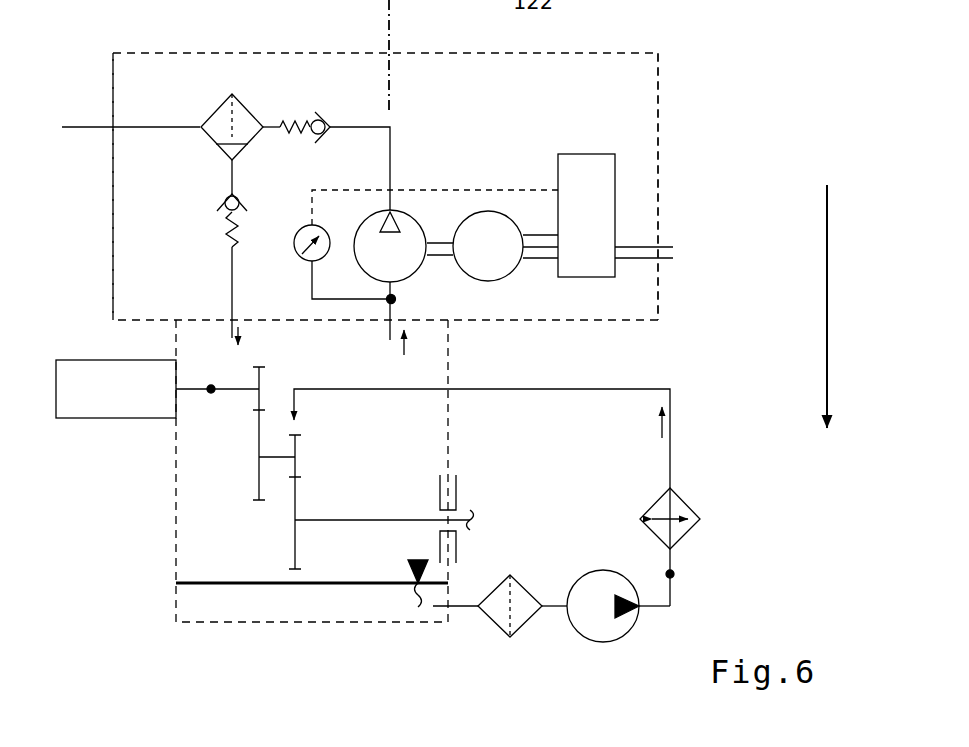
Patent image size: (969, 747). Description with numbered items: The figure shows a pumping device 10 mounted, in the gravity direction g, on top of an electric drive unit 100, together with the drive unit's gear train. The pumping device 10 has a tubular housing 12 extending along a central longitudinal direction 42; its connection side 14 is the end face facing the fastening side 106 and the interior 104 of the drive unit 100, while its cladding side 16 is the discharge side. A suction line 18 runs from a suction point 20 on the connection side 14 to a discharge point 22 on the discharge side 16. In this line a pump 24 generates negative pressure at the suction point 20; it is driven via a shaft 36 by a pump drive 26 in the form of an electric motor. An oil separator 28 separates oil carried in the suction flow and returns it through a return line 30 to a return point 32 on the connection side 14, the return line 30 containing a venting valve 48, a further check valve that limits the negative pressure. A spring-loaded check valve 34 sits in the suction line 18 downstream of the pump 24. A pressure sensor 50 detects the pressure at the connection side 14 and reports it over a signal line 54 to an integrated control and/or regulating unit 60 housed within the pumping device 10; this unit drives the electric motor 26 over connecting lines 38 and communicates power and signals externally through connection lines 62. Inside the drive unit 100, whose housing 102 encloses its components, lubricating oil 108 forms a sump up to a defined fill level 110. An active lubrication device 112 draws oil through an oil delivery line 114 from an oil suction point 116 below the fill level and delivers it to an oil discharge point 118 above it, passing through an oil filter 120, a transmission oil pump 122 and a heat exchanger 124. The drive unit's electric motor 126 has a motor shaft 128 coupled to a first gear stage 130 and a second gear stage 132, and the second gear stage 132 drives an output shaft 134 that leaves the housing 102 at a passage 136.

The pumping device 10 is at (676, 66).
The housing 12 is at (658, 125).
The connection side 14 is at (305, 326).
The cladding side 16 is at (102, 227).
The suction line 18 is at (404, 135).
The suction point 20 is at (384, 330).
The discharge point 22 is at (102, 117).
The pump 24 is at (405, 211).
The pump drive 26 is at (499, 214).
The oil separator 28 is at (213, 95).
The return line 30 is at (220, 285).
The return point 32 is at (221, 328).
The check valve 34 is at (301, 118).
The shaft 36 is at (440, 246).
The connecting lines 38 is at (535, 272).
The central longitudinal direction 42 is at (389, 40).
The venting valve 48 is at (212, 222).
The pressure sensor 50 is at (299, 228).
The signal line 54 is at (470, 190).
The integrated control and/or regulating unit 60 is at (582, 182).
The connection lines 62 is at (670, 239).
The gravity direction g is at (827, 299).
The electric drive unit 100 is at (108, 578).
The housing 102 is at (176, 450).
The interior 104 is at (190, 337).
The fastening side 106 is at (428, 321).
The lubricating oil 108 is at (200, 600).
The fill level 110 is at (421, 556).
The active lubrication device 112 is at (630, 660).
The oil delivery line 114 is at (703, 575).
The oil suction point 116 is at (436, 615).
The oil discharge point 118 is at (311, 406).
The oil filter 120 is at (521, 647).
The transmission oil pump 122 is at (648, 622).
The heat exchanger 124 is at (694, 494).
The electric motor 126 is at (72, 430).
The motor shaft 128 is at (211, 392).
The first gear stage 130 is at (235, 491).
The second gear stage 132 is at (282, 543).
The output shaft 134 is at (341, 514).
The passage 136 is at (469, 500).